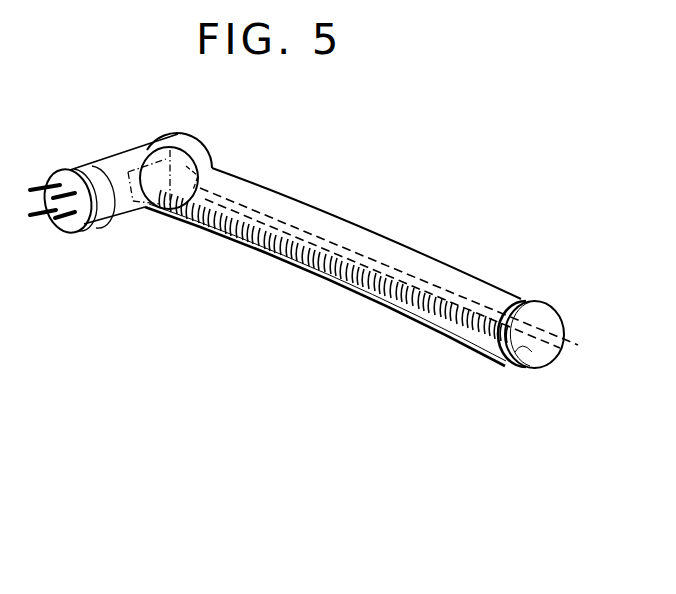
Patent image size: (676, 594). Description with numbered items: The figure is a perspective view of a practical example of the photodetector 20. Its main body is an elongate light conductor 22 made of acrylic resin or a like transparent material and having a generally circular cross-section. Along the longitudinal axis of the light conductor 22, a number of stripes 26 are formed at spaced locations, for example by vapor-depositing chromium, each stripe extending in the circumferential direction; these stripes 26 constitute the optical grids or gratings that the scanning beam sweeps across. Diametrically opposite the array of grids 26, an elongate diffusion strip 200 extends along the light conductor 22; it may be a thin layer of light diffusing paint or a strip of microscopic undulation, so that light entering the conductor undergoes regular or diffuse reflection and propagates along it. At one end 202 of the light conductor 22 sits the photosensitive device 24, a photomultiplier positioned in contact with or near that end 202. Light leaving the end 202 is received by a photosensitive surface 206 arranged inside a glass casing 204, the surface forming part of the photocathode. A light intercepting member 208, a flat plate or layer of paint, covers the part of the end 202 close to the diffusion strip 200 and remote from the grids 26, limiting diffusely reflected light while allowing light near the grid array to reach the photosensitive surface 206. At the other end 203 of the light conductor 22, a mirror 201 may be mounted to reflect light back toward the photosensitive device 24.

The photodetector 20 is at (360, 191).
The light conductor 22 is at (433, 256).
The photosensitive device 24 is at (77, 161).
The stripes 26 is at (249, 236).
The diffusion strip 200 is at (578, 345).
The mirror 201 is at (524, 358).
The end of the light conductor 202 is at (152, 148).
The other end 203 is at (521, 301).
The glass casing 204 is at (200, 141).
The photosensitive surface 206 is at (127, 208).
The light intercepting member 208 is at (196, 172).